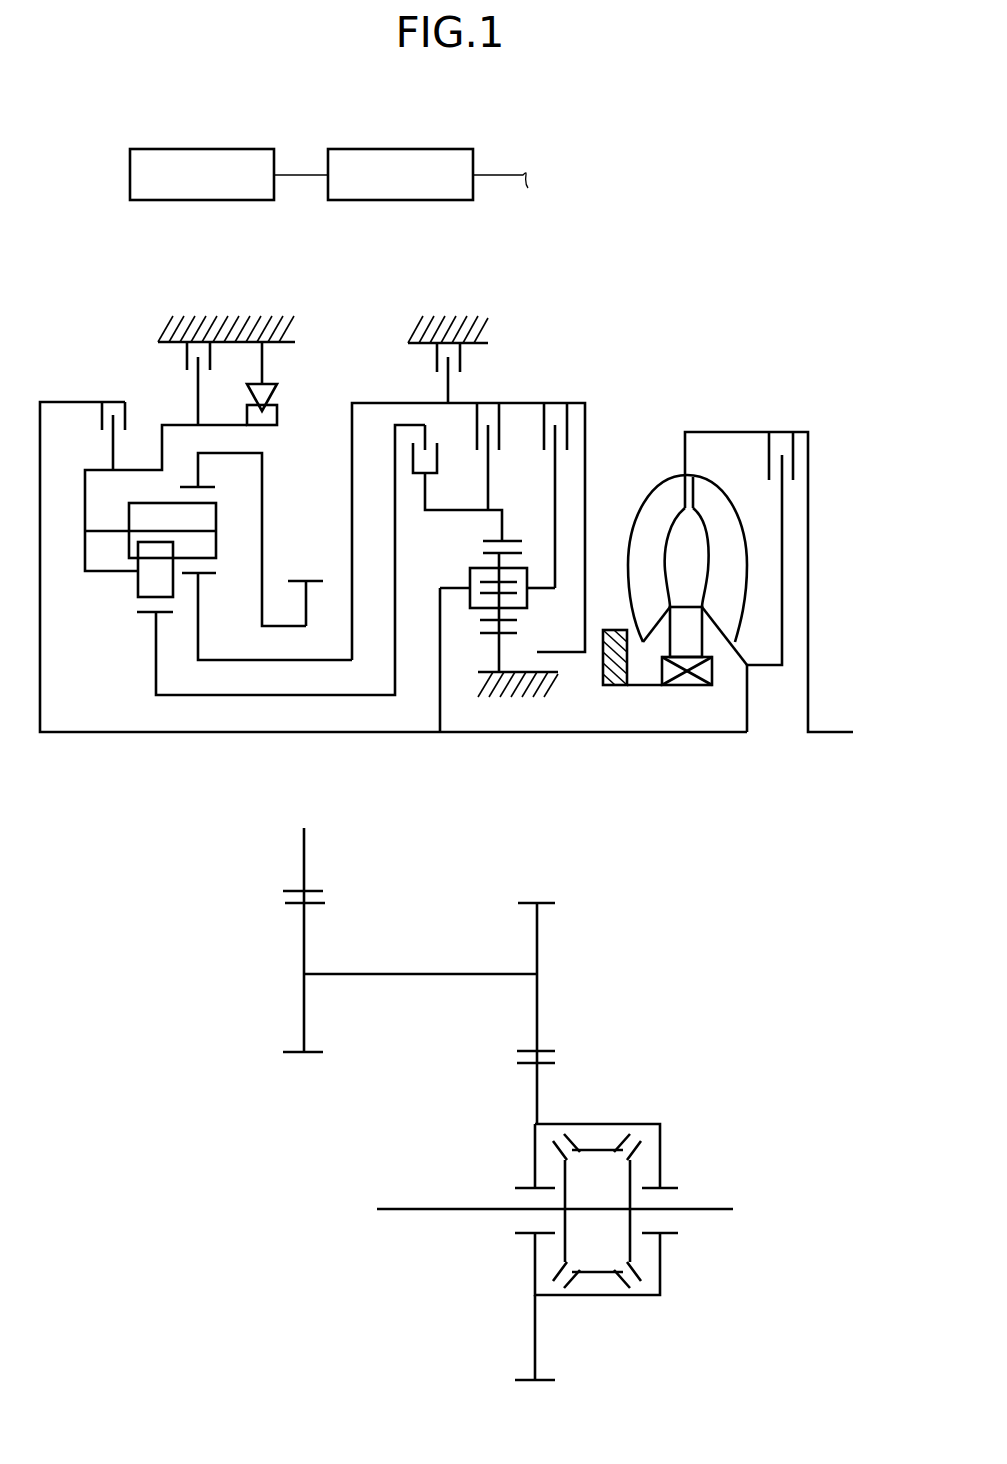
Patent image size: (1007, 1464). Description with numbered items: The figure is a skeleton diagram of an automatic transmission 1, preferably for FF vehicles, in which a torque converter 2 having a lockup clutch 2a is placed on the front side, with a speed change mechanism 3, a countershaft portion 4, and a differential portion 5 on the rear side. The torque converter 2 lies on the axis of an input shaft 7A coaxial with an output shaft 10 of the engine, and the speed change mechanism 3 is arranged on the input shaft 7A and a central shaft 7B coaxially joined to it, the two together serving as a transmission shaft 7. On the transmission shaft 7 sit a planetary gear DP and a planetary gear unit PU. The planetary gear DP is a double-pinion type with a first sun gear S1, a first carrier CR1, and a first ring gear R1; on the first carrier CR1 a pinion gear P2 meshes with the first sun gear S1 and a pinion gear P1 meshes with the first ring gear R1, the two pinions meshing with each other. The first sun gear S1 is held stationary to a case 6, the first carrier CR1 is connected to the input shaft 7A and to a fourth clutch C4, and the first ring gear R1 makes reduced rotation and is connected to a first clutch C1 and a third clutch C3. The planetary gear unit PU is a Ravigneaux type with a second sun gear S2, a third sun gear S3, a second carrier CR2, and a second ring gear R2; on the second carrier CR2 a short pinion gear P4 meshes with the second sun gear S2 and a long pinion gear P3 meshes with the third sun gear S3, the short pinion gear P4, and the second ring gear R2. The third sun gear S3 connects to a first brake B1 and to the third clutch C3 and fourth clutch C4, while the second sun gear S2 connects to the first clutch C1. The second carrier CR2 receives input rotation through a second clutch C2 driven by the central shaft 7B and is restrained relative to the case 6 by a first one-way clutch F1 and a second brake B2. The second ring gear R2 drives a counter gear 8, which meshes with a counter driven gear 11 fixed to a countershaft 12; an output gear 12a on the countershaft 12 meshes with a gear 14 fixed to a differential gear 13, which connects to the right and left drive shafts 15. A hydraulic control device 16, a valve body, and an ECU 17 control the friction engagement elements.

The automatic transmission 1 is at (648, 278).
The torque converter 2 is at (714, 418).
The lockup clutch 2a is at (794, 463).
The speed change mechanism 3 is at (352, 296).
The countershaft portion 4 is at (604, 992).
The differential portion 5 is at (668, 1106).
The case 6 is at (157, 330).
The transmission shaft 7 is at (382, 795).
The input shaft 7A is at (485, 734).
The central shaft 7B is at (395, 734).
The counter gear 8 is at (312, 580).
The output shaft 10 is at (823, 730).
The counter driven gear 11 is at (302, 945).
The countershaft 12 is at (411, 972).
The output gear 12a is at (540, 938).
The differential gear 13 is at (598, 1298).
The gear 14 is at (540, 1095).
The drive shafts 15 is at (418, 1213).
The hydraulic control device 16 is at (398, 148).
The ECU 17 is at (193, 148).
The first brake B1 is at (447, 345).
The second brake B2 is at (195, 356).
The first clutch C1 is at (457, 483).
The second clutch C2 is at (111, 422).
The third clutch C3 is at (487, 442).
The fourth clutch C4 is at (556, 481).
The first carrier CR1 is at (528, 596).
The second carrier CR2 is at (84, 486).
The planetary gear DP is at (513, 531).
The first one-way clutch F1 is at (261, 356).
The pinion gear P1 is at (482, 557).
The pinion gear P2 is at (482, 616).
The long pinion gear P3 is at (217, 540).
The short pinion gear P4 is at (137, 588).
The planetary gear unit PU is at (91, 588).
The first ring gear R1 is at (482, 540).
The second ring gear R2 is at (207, 486).
The first sun gear S1 is at (485, 632).
The second sun gear S2 is at (149, 614).
The third sun gear S3 is at (203, 575).